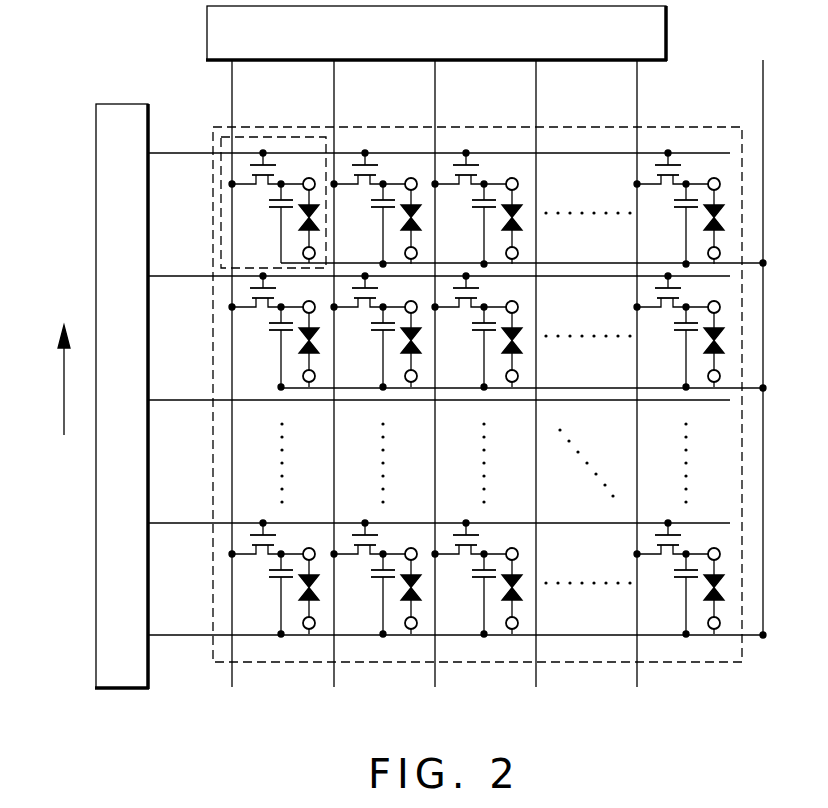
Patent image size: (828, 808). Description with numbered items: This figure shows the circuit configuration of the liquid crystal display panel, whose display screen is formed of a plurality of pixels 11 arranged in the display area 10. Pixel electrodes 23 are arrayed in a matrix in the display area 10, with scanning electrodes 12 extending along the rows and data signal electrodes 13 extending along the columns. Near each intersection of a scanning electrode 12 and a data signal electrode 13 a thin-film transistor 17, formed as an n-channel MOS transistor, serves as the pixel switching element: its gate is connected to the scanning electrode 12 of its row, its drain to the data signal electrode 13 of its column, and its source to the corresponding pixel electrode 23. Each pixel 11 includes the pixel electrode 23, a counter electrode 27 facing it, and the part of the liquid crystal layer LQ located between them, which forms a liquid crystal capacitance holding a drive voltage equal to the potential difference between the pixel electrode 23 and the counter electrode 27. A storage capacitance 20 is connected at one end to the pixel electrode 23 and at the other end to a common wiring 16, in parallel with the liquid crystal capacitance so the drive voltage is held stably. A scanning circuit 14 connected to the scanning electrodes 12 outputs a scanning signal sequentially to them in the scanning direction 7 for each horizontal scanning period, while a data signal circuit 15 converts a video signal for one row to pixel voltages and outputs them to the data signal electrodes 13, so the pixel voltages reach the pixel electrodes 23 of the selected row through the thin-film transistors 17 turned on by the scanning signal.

The scanning direction 7 is at (62, 382).
The display area 10 is at (283, 663).
The pixel 11 is at (226, 133).
The scanning electrode 12 is at (153, 151).
The data signal electrode 13 is at (235, 84).
The scanning circuit 14 is at (122, 103).
The data signal circuit 15 is at (668, 31).
The common wiring 16 is at (765, 568).
The thin-film transistor 17 is at (260, 199).
The storage capacitance 20 is at (267, 205).
The pixel electrode 23 is at (310, 177).
The counter electrode 27 is at (303, 253).
The liquid crystal layer LQ is at (299, 217).